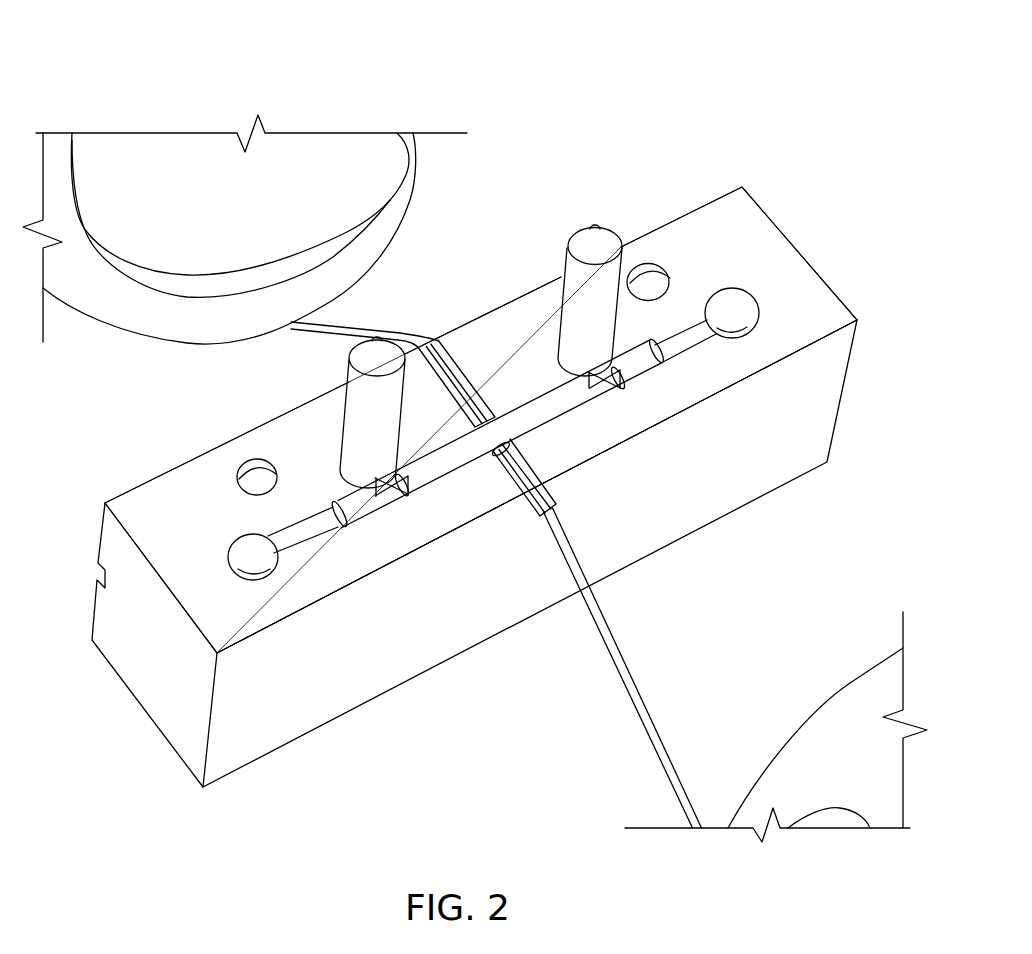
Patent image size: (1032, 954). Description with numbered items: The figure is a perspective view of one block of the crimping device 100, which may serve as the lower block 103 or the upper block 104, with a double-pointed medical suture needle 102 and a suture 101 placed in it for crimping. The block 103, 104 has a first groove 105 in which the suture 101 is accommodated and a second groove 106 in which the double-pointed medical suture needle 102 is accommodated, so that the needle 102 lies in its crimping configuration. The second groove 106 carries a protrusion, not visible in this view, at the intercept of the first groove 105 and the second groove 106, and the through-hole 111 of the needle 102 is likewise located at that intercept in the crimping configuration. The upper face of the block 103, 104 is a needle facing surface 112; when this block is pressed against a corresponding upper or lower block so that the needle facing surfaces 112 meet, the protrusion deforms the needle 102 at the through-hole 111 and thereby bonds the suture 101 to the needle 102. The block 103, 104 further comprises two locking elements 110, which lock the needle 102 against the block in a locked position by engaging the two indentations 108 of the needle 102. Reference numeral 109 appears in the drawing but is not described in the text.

The crimping device 100 is at (150, 66).
The suture 101 is at (640, 713).
The double-pointed medical suture needle 102 is at (638, 362).
The lower block 103 is at (738, 243).
The upper block 104 is at (499, 387).
The first groove 105 is at (434, 343).
The second groove 106 is at (432, 487).
The indentations 108 is at (382, 489).
The ring 109 is at (460, 453).
The locking elements 110 is at (362, 413).
The through-hole 111 is at (517, 382).
The needle facing surface 112 is at (158, 537).